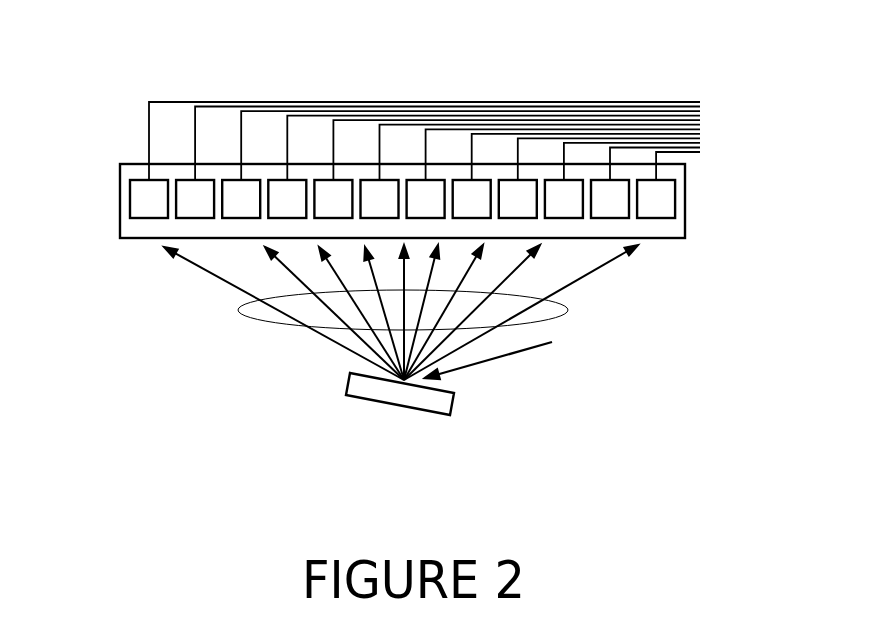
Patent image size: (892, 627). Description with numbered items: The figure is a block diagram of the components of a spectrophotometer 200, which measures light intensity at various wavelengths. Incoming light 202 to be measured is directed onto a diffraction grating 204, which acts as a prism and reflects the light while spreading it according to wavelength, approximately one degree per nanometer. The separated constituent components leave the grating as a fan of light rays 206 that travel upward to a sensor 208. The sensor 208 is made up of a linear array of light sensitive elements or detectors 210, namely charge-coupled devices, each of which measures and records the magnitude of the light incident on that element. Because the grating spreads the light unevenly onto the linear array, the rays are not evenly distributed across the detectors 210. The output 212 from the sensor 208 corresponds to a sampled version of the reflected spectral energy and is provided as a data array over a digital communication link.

The spectrophotometer 200 is at (404, 146).
The incoming light 202 is at (530, 365).
The diffraction grating 204 is at (452, 394).
The light rays 206 is at (376, 312).
The sensor 208 is at (362, 201).
The detectors 210 is at (366, 175).
The output 212 is at (702, 97).